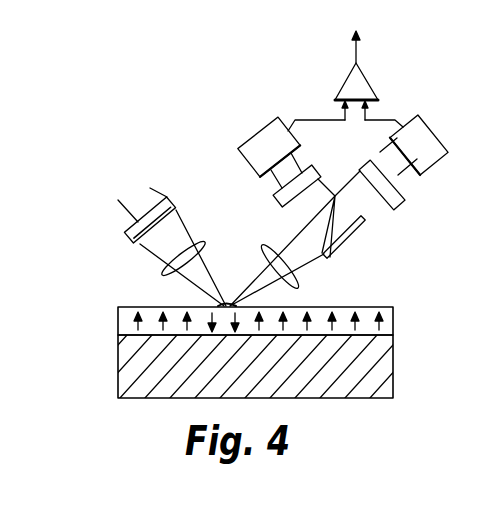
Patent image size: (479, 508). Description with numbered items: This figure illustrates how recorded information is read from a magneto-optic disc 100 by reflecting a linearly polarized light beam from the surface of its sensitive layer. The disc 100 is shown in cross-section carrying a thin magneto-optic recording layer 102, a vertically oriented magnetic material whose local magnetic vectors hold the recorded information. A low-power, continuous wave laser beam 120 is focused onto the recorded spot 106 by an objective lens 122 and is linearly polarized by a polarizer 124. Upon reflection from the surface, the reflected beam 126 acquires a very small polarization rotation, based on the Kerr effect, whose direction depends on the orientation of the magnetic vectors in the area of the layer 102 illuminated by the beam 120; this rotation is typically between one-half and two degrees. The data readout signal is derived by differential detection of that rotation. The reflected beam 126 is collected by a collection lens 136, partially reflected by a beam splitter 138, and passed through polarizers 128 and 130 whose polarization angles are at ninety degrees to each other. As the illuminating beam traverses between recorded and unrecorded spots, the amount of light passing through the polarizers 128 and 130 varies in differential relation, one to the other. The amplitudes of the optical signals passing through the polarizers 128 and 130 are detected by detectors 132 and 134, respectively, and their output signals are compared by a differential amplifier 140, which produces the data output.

The disc 100 is at (380, 368).
The magneto-optic recording layer 102 is at (388, 320).
The recorded spot 106 is at (210, 305).
The laser beam 120 is at (148, 191).
The objective lens 122 is at (206, 243).
The polarizer 124 is at (171, 208).
The reflected beam 126 is at (255, 273).
The polarizer 128 is at (314, 164).
The polarizer 130 is at (392, 204).
The detector 132 is at (275, 126).
The detector 134 is at (429, 170).
The collection lens 136 is at (299, 283).
The beam splitter 138 is at (340, 243).
The differential amplifier 140 is at (363, 82).